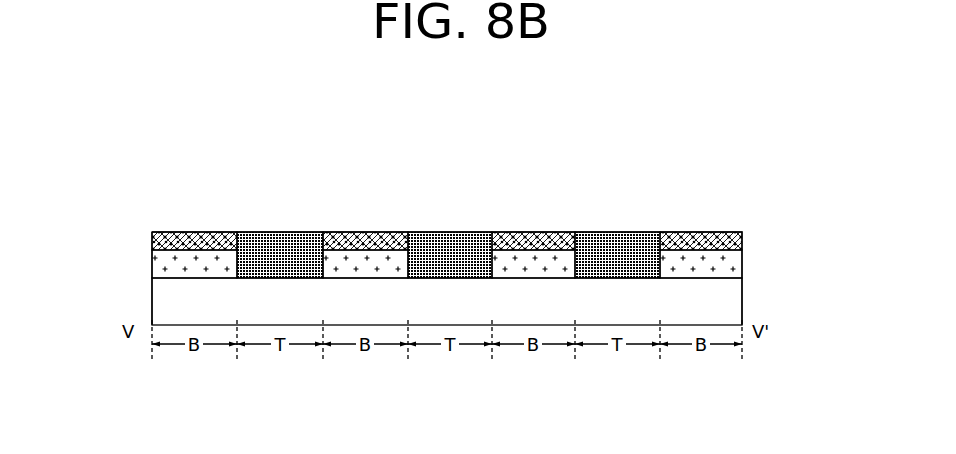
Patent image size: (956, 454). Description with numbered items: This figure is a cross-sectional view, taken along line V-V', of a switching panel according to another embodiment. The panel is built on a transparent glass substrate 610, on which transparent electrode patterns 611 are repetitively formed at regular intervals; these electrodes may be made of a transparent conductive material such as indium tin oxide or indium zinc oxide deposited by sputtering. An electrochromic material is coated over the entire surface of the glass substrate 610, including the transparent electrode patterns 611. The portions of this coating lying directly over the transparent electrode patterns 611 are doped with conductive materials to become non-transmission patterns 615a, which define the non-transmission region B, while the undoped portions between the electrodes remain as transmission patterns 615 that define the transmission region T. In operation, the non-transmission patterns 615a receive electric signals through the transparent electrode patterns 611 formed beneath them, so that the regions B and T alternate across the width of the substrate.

The transparent glass substrate 610 is at (728, 300).
The transparent electrode patterns 611 is at (170, 270).
The transmission patterns 615 is at (278, 252).
The non-transmission patterns 615a is at (189, 232).